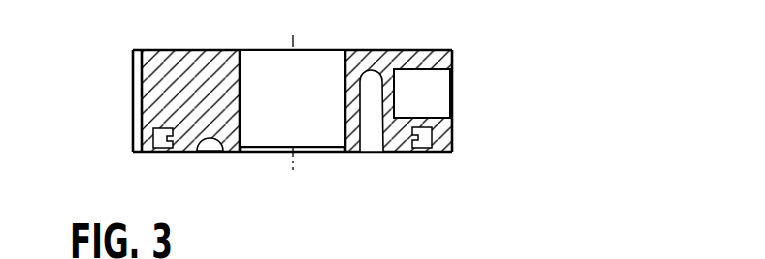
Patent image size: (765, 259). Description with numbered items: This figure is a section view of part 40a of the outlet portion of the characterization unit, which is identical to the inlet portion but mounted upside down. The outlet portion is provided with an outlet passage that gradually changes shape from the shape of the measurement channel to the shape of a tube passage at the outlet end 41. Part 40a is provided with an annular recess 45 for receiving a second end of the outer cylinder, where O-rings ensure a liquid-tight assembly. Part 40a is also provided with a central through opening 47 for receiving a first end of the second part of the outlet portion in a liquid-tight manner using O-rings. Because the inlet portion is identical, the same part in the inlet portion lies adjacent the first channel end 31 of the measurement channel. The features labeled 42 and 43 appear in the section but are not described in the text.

The first part of the outlet portion 40a is at (530, 128).
The outlet end 41 is at (450, 80).
The recess 42 is at (438, 64).
The groove 43 is at (208, 140).
The annular recess 45 is at (154, 144).
The central through opening 47 is at (321, 67).
The first channel end 31 is at (480, 251).